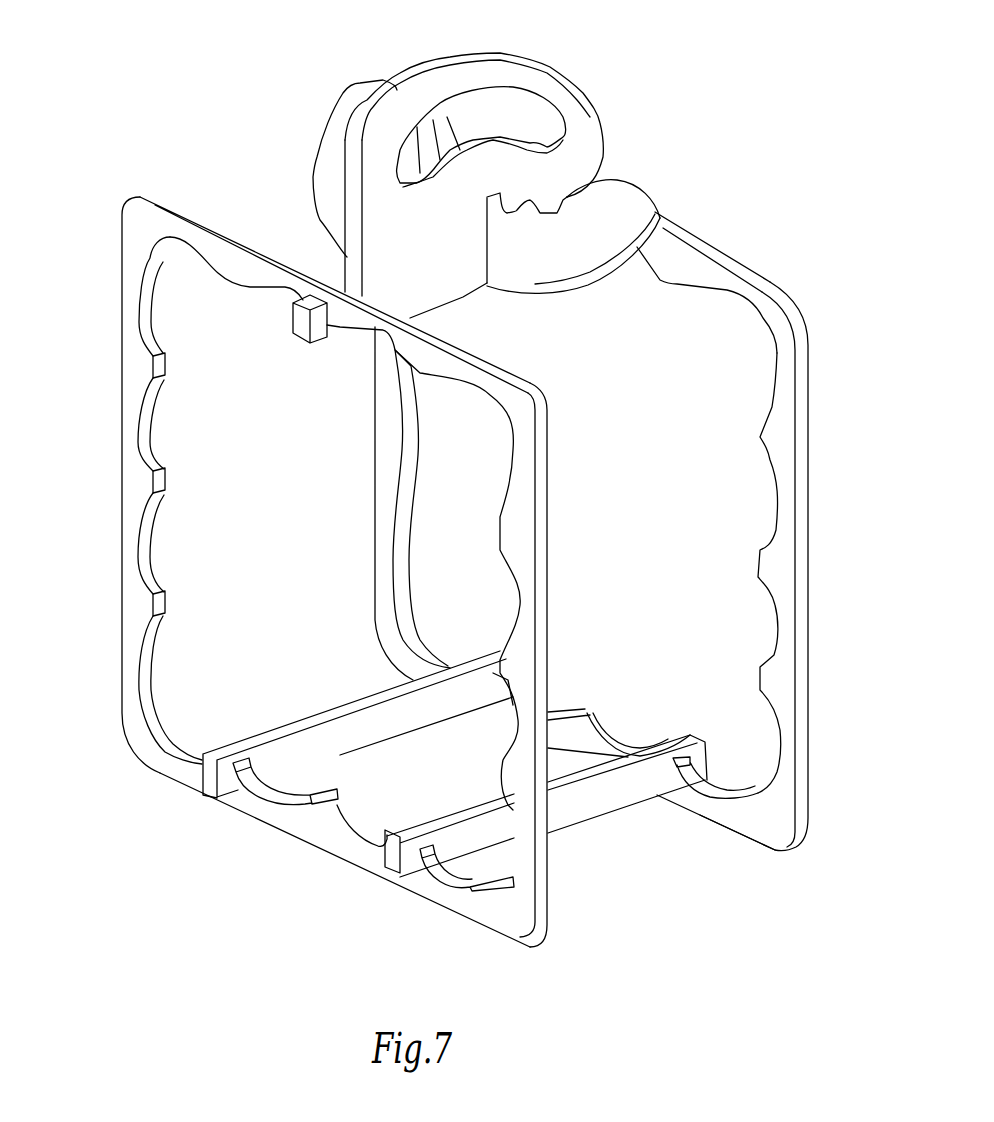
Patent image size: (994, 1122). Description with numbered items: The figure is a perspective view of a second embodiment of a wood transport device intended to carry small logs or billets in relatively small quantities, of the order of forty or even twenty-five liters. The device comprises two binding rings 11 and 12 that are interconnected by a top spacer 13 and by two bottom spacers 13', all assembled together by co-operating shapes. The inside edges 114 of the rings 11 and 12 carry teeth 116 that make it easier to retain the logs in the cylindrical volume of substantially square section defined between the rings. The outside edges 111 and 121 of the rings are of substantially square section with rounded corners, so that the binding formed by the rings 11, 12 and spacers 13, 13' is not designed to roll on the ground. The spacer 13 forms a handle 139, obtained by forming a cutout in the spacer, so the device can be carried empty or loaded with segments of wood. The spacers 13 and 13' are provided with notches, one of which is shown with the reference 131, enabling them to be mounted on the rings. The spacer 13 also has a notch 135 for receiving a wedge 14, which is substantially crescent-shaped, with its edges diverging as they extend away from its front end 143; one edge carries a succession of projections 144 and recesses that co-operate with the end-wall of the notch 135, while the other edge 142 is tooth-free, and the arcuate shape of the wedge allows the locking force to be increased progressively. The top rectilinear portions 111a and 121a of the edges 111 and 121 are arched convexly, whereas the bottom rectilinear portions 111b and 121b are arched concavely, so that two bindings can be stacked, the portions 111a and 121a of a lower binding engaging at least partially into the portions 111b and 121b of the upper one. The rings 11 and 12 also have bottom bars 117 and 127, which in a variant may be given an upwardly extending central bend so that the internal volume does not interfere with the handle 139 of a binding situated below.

The binding ring 11 is at (520, 626).
The binding ring 12 is at (782, 458).
The top spacer 13 is at (354, 229).
The bottom spacer 13' is at (523, 778).
The wedge 14 is at (560, 187).
The outside edge 111 is at (543, 893).
The top rectilinear portion 111a is at (193, 214).
The bottom rectilinear portion 111b is at (340, 860).
The inside edge 114 is at (150, 698).
The teeth 116 is at (147, 597).
The bottom bar 117 is at (262, 802).
The outside edge 121 is at (799, 672).
The top rectilinear portion 121a is at (745, 263).
The bottom rectilinear portion 121b is at (768, 852).
The bottom bar 127 is at (578, 737).
The notch 131 is at (326, 324).
The notch 135 is at (495, 250).
The handle 139 is at (527, 73).
The edge 142 is at (570, 289).
The front end 143 is at (645, 212).
The projections 144 is at (542, 204).